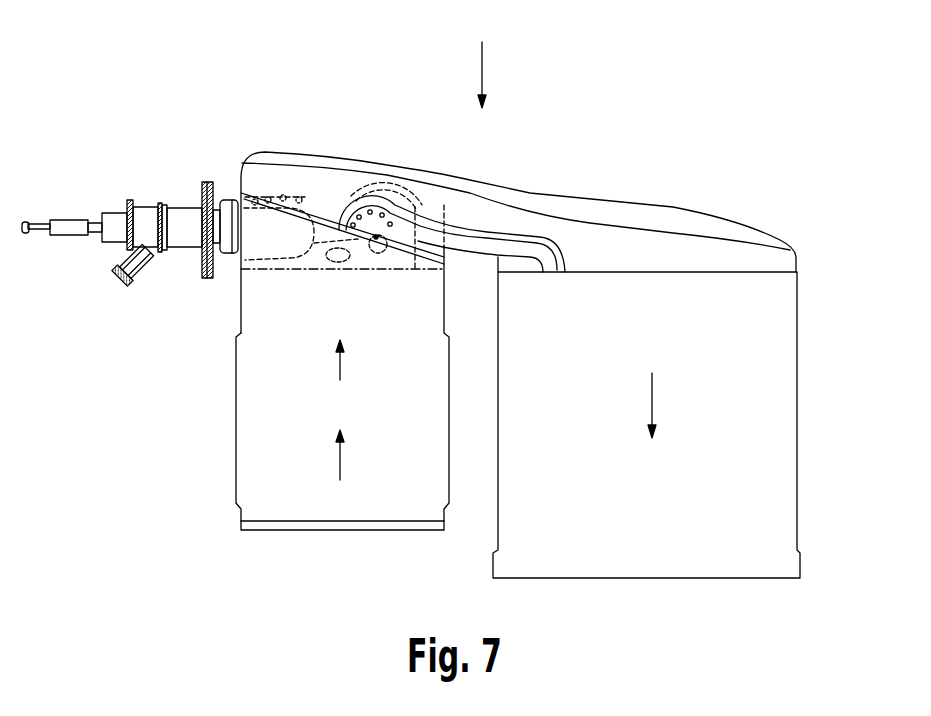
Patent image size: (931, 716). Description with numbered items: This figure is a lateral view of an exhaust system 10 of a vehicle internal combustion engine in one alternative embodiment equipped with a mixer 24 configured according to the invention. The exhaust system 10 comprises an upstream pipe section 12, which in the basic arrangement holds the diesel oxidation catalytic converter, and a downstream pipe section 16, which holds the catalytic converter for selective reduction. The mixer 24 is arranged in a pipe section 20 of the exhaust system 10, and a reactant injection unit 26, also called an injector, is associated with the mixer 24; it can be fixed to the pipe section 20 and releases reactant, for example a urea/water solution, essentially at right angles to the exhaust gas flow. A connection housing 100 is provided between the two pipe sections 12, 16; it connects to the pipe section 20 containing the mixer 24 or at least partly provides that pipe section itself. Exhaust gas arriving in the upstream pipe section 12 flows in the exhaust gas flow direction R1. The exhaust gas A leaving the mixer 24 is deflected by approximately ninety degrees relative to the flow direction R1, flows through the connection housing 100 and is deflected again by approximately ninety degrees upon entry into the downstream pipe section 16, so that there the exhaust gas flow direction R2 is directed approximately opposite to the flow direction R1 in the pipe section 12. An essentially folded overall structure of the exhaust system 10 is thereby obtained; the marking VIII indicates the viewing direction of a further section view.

The exhaust system 10 is at (731, 116).
The connection housing 100 is at (556, 195).
The mixer 24 is at (326, 189).
The pipe section 20 is at (260, 277).
The upstream pipe section 12 is at (237, 412).
The downstream pipe section 16 is at (798, 402).
The reactant injection unit 26 is at (146, 295).
The exhaust gas leaving the mixer A is at (342, 366).
The exhaust gas flow direction upstream of the mixer R1 is at (340, 452).
The exhaust gas flow direction downstream of the mixer R2 is at (650, 400).
The section VIII view direction VIII is at (482, 68).